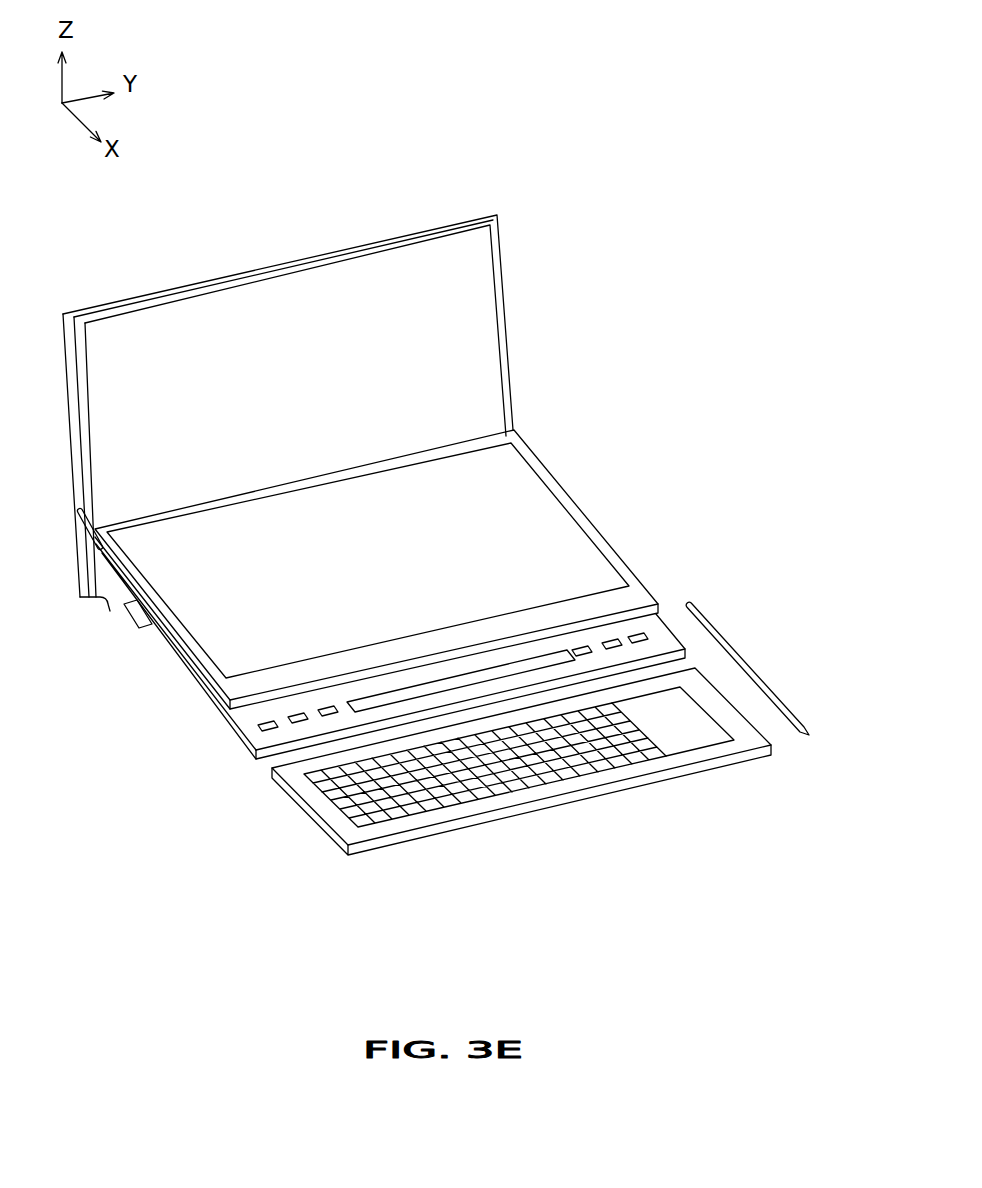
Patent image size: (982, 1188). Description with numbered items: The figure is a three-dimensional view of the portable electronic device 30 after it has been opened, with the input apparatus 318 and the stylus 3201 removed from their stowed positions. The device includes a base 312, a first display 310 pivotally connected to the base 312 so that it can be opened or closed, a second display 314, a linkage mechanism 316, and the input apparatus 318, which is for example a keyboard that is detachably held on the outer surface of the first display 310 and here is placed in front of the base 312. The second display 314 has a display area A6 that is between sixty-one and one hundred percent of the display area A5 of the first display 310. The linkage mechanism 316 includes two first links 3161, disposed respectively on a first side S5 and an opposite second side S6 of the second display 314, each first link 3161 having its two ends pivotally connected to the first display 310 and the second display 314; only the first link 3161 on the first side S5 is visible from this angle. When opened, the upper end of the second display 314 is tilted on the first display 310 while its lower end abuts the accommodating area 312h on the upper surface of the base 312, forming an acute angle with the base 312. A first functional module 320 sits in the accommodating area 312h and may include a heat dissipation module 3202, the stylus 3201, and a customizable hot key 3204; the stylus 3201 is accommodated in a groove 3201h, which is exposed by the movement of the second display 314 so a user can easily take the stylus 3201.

The portable electronic device 30 is at (826, 161).
The first display 310 is at (528, 282).
The display area of the first display A5 is at (397, 272).
The second display 314 is at (576, 453).
The display area of the second display A6 is at (552, 537).
The first link 3161 is at (73, 522).
The linkage mechanism 316 is at (94, 609).
The heat dissipation module 3202 is at (127, 627).
The accommodating area 312h is at (166, 647).
The customizable hot key 3204 is at (328, 711).
The base 312 is at (208, 735).
The groove 3201h is at (375, 715).
The input apparatus 318 is at (543, 788).
The stylus 3201 is at (737, 648).
The second side S6 is at (840, 787).
The first side S5 is at (387, 905).
The first functional module 320 is at (156, 965).